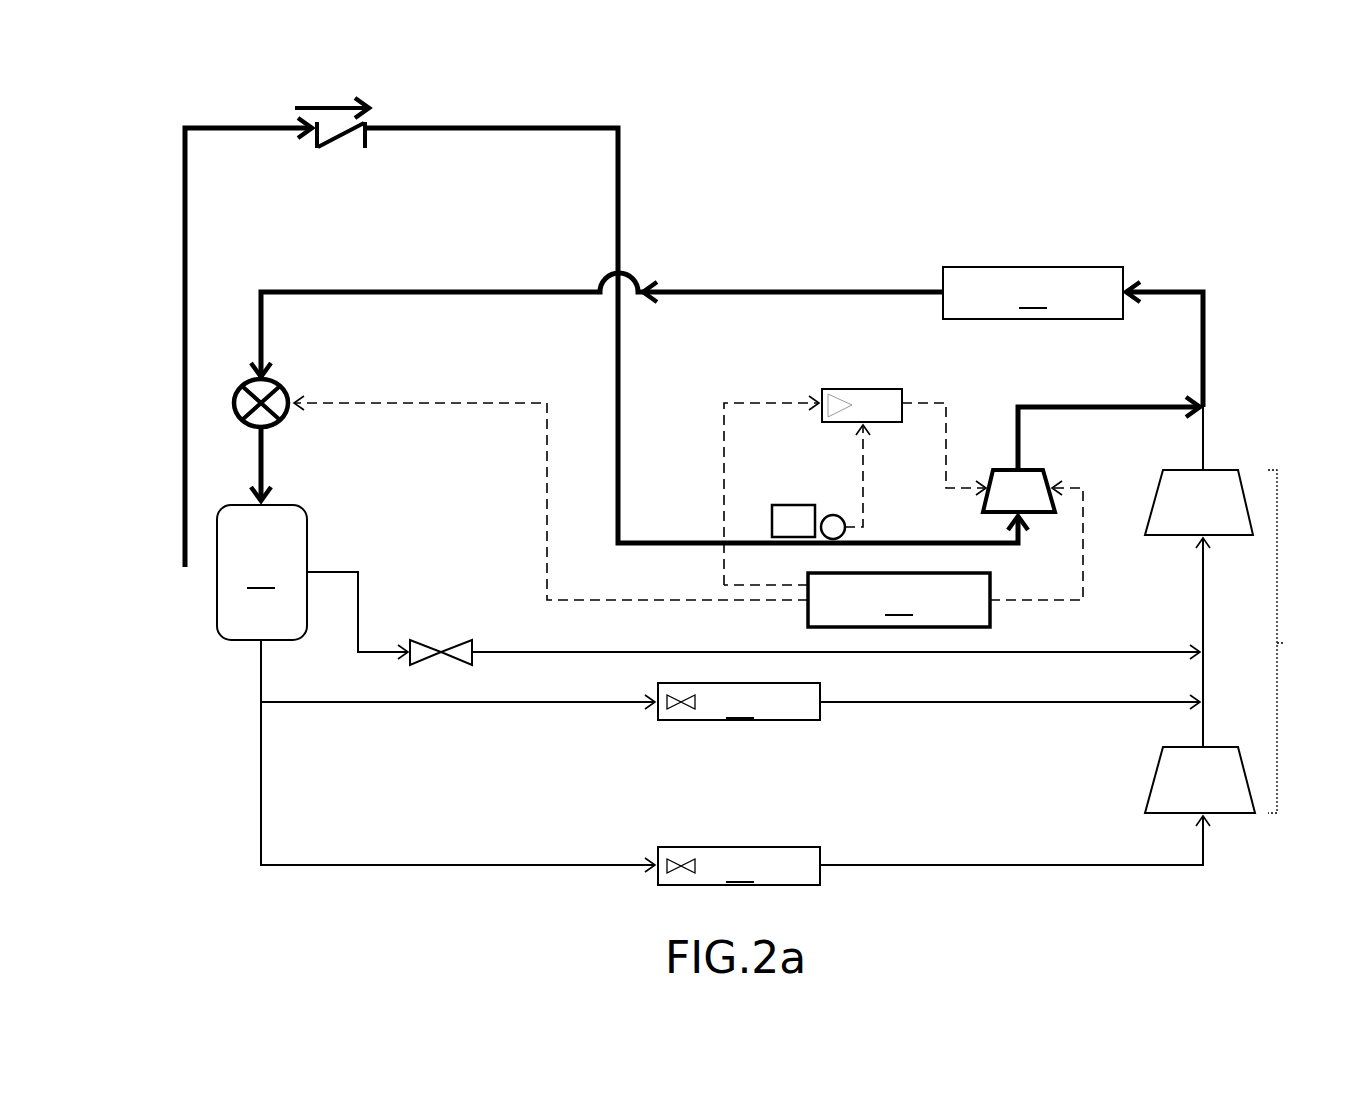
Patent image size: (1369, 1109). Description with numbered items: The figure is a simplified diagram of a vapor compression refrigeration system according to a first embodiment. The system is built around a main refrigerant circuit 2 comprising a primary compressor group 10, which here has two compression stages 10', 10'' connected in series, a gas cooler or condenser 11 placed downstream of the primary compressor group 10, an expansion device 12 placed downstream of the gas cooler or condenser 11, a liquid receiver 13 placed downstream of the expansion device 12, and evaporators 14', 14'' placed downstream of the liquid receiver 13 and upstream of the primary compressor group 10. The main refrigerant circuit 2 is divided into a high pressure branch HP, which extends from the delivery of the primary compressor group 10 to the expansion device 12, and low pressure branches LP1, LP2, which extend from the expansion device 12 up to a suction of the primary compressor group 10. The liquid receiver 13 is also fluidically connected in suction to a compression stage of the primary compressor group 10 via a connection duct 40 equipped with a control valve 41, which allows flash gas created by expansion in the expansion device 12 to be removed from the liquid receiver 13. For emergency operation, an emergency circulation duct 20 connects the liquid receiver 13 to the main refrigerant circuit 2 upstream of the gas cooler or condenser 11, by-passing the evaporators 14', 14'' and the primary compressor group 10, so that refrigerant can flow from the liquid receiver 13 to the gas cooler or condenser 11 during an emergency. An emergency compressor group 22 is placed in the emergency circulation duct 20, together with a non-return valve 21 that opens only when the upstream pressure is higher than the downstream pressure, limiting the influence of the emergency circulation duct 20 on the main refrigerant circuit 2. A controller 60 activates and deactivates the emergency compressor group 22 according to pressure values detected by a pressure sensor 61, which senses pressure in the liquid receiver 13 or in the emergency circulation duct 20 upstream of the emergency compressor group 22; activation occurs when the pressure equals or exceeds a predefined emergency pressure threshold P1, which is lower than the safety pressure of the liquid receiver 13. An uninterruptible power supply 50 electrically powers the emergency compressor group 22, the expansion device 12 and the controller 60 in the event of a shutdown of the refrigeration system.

The main refrigerant circuit 2 is at (370, 292).
The primary compressor group 10 is at (1298, 641).
The compression stage 10' is at (1200, 780).
The compression stage 10'' is at (1199, 502).
The gas cooler or condenser 11 is at (1033, 293).
The expansion device 12 is at (284, 390).
The liquid receiver 13 is at (262, 572).
The evaporator 14' is at (739, 701).
The evaporator 14'' is at (739, 866).
The emergency circulation duct 20 is at (622, 180).
The non-return valve 21 is at (302, 124).
The emergency compressor group 22 is at (1012, 468).
The connection duct 40 is at (1120, 650).
The control valve 41 is at (441, 640).
The uninterruptible power supply 50 is at (688, 515).
The controller 60 is at (862, 388).
The pressure sensor 61 is at (828, 515).
The emergency pressure threshold P1 is at (793, 521).
The high pressure branch HP is at (888, 258).
The low pressure branch LP1 is at (538, 712).
The low pressure branch LP2 is at (503, 887).